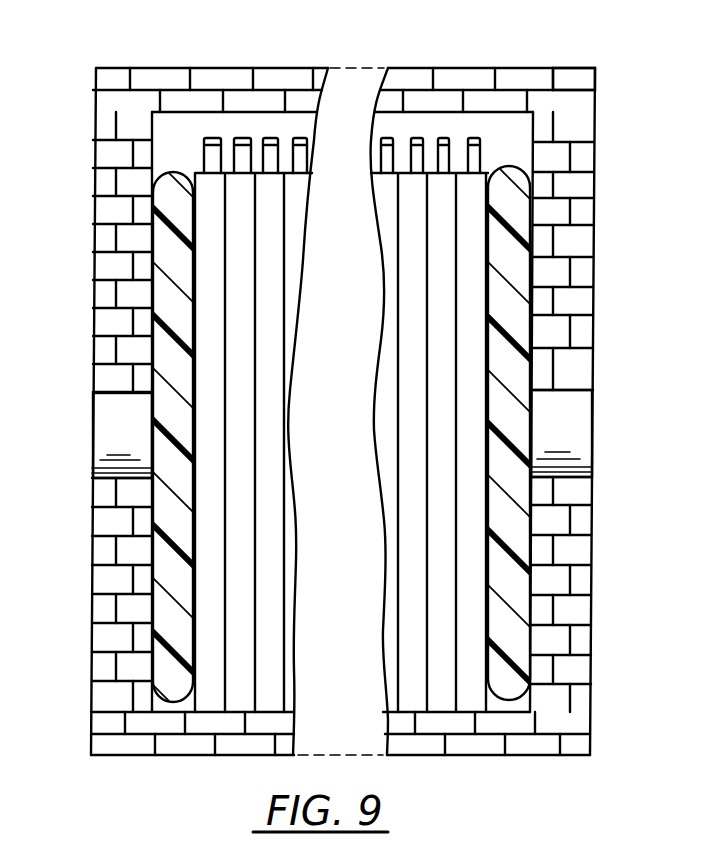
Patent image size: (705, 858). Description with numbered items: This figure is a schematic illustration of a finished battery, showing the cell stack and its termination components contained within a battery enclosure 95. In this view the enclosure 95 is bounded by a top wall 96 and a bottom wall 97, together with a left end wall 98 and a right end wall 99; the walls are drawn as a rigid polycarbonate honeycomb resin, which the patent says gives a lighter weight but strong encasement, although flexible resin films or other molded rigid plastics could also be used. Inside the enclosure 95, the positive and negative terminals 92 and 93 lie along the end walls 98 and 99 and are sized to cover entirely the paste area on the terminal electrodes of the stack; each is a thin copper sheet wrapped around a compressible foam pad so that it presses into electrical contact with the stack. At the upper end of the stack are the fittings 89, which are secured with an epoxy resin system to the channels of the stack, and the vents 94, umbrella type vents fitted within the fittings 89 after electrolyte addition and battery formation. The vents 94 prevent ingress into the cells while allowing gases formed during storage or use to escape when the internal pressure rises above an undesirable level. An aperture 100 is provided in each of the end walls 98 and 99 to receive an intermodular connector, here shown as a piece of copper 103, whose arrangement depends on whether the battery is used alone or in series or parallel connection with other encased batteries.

The fittings 89 is at (200, 163).
The positive terminal 92 is at (168, 708).
The negative terminal 93 is at (502, 697).
The vents 94 is at (272, 140).
The battery enclosure 95 is at (536, 6).
The top wall 96 is at (543, 68).
The bottom wall 97 is at (247, 755).
The left end wall 98 is at (100, 545).
The right end wall 99 is at (565, 524).
The aperture 100 is at (106, 393).
The piece of copper 103 is at (107, 422).